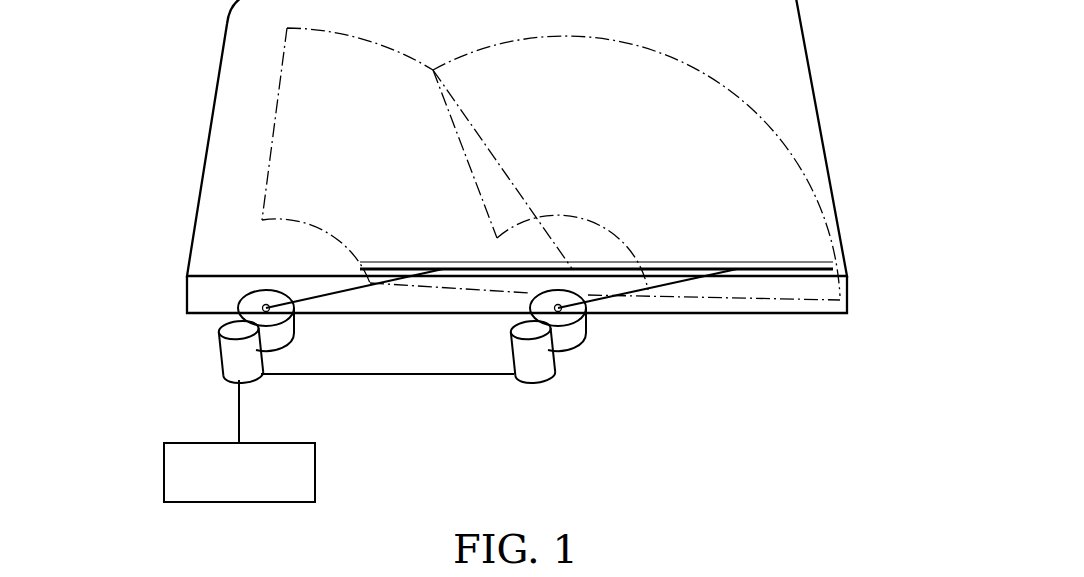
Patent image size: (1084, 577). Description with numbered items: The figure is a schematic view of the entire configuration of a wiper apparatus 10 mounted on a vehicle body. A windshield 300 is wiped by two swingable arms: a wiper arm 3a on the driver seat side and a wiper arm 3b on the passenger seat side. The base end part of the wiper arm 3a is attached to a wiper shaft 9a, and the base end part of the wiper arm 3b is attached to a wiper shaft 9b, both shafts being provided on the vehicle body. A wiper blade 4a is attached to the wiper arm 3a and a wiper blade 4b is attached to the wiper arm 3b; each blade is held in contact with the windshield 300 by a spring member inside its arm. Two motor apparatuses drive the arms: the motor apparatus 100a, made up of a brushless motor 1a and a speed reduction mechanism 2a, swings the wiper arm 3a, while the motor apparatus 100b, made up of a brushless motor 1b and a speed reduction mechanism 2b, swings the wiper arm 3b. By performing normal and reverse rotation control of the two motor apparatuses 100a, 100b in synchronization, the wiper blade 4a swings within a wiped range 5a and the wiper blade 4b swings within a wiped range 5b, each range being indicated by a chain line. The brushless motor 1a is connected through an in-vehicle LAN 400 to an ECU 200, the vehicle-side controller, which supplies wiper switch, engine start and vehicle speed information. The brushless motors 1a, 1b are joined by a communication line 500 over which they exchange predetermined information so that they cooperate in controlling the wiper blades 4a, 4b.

The wiper apparatus 10 is at (784, 412).
The motor apparatus 100a is at (184, 352).
The motor apparatus 100b is at (598, 364).
The brushless motor 1a is at (230, 372).
The brushless motor 1b is at (542, 380).
The speed reduction mechanism 2a is at (275, 294).
The speed reduction mechanism 2b is at (584, 300).
The wiper arm 3a is at (347, 293).
The wiper arm 3b is at (642, 293).
The wiper blade 4a is at (478, 270).
The wiper blade 4b is at (772, 268).
The wiped range 5a is at (408, 48).
The wiped range 5b is at (683, 68).
The wiper shaft 9a is at (265, 303).
The wiper shaft 9b is at (560, 304).
The ECU 200 is at (316, 470).
The windshield 300 is at (790, 27).
The in-vehicle LAN 400 is at (242, 413).
The communication line 500 is at (412, 377).